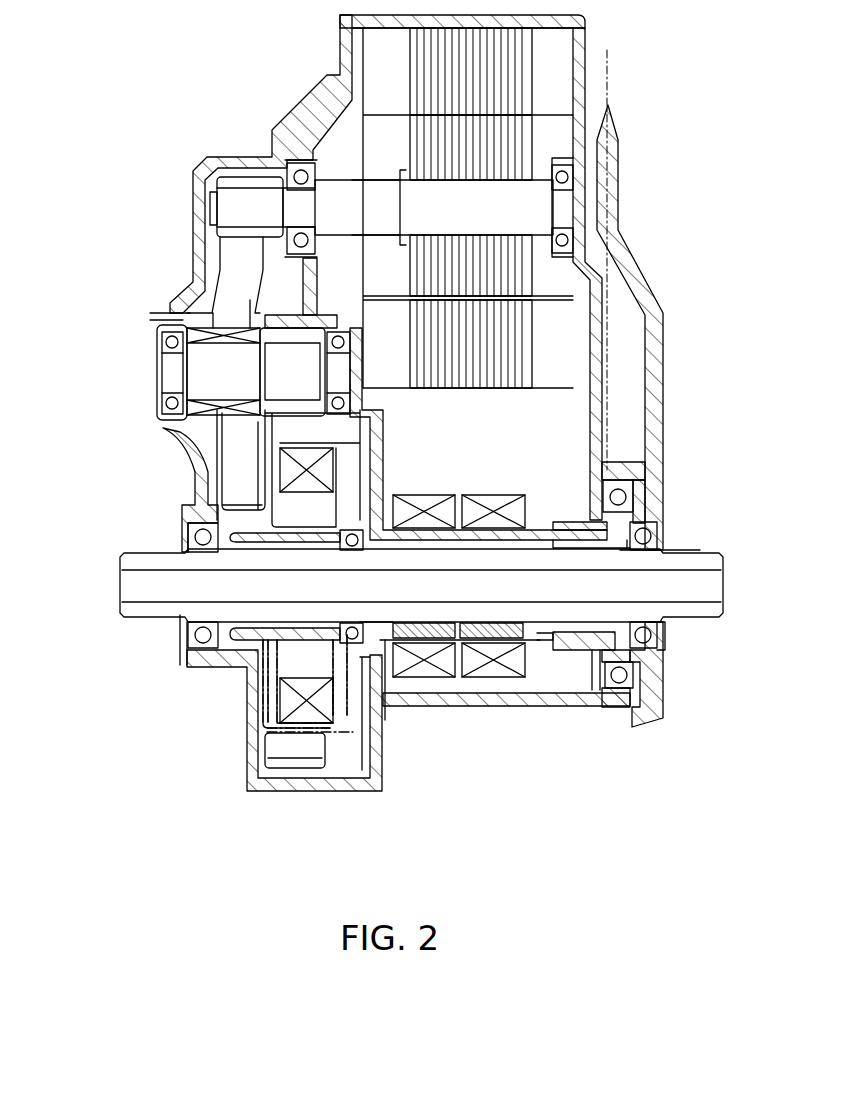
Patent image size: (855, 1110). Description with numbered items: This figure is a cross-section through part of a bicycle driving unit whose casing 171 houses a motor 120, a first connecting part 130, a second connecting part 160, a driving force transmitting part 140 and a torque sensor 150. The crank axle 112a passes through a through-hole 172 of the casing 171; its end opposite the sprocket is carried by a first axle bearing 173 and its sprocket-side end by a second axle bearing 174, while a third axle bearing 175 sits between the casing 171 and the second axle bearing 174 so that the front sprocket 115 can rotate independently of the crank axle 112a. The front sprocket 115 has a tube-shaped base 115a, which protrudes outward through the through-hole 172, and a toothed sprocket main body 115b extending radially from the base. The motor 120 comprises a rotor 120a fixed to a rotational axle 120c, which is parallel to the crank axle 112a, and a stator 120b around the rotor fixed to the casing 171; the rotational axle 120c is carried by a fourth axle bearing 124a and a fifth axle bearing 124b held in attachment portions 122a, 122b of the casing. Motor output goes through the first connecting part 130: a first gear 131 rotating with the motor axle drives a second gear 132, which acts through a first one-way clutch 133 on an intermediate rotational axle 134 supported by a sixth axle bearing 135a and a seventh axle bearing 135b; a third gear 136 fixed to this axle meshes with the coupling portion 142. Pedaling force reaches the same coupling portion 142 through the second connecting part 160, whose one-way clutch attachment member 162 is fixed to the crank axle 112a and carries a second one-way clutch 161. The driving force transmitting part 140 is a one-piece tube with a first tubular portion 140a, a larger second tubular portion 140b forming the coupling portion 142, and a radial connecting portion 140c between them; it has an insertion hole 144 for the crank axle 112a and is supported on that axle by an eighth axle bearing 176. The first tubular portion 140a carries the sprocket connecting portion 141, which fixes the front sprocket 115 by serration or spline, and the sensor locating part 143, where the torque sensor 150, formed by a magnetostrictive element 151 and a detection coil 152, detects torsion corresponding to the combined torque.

The crank axle 112a is at (700, 565).
The front sprocket 115 is at (754, 262).
The base 115a is at (660, 342).
The sprocket main body 115b is at (640, 292).
The motor 120 is at (706, 12).
The rotor 120a is at (530, 195).
The stator 120b is at (555, 40).
The rotational axle 120c is at (550, 128).
The attachment portion 122a is at (303, 105).
The attachment portion 122b is at (555, 161).
The fourth axle bearing 124a is at (290, 150).
The fifth axle bearing 124b is at (565, 185).
The first connecting part 130 is at (80, 196).
The first gear 131 is at (212, 198).
The second gear 132 is at (220, 262).
The first one-way clutch 133 is at (178, 322).
The rotational axle 134 is at (200, 358).
The sixth axle bearing 135a is at (160, 412).
The seventh axle bearing 135b is at (360, 408).
The third gear 136 is at (290, 400).
The driving force transmitting part 140 is at (471, 410).
The first tubular portion 140a is at (543, 525).
The second tubular portion 140b is at (383, 422).
The connecting portion 140c is at (375, 465).
The sprocket connecting portion 141 is at (650, 520).
The coupling portion 142 is at (170, 434).
The sensor locating part 143 is at (460, 674).
The insertion hole 144 is at (553, 547).
The torque sensor 150 is at (480, 810).
The magnetostrictive element 151 is at (403, 644).
The detection coil 152 is at (428, 674).
The second connecting part 160 is at (100, 462).
The second one-way clutch 161 is at (283, 468).
The one-way clutch attachment member 162 is at (293, 492).
The casing 171 is at (290, 792).
The through-hole 172 is at (645, 525).
The first axle bearing 173 is at (187, 530).
The second axle bearing 174 is at (658, 546).
The third axle bearing 175 is at (622, 670).
The eighth axle bearing 176 is at (380, 790).